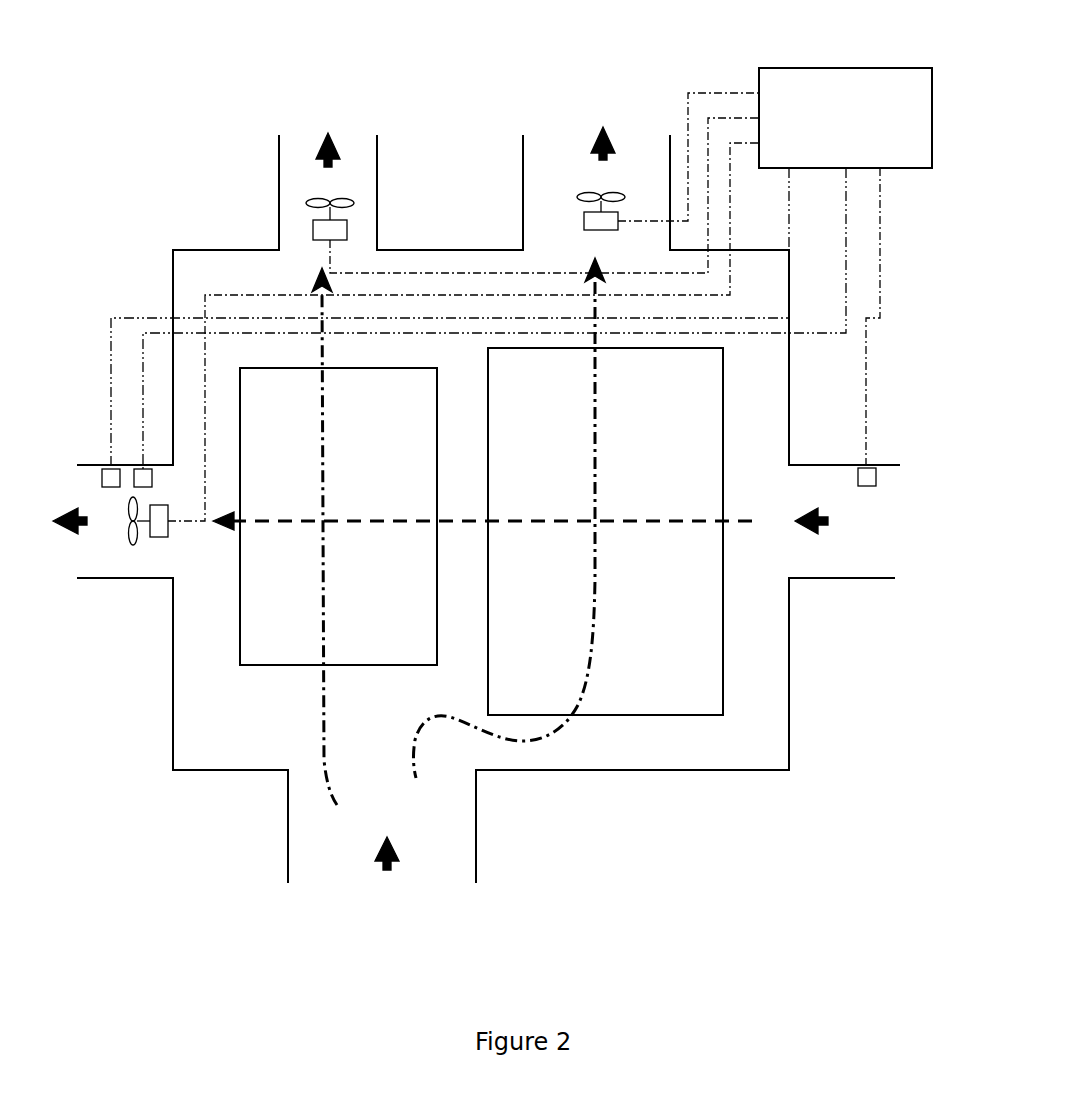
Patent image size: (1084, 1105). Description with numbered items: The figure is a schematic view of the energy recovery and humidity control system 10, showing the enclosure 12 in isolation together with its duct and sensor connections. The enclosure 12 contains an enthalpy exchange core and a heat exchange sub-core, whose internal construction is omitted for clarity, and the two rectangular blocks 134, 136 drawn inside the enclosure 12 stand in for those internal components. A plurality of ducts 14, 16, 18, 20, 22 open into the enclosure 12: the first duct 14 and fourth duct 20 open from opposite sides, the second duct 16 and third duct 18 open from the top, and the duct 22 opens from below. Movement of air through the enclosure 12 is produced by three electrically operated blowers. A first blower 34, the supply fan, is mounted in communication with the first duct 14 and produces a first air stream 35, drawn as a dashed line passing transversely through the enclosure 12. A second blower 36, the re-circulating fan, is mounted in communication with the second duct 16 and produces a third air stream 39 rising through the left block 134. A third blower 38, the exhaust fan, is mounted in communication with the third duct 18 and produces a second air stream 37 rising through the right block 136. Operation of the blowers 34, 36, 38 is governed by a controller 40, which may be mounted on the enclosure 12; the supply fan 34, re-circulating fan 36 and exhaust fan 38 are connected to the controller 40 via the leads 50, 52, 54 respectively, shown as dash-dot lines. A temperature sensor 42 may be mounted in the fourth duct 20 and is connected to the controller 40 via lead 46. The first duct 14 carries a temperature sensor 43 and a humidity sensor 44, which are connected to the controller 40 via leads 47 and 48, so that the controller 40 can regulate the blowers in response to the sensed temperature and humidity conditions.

The energy recovery and humidity control system 10 is at (418, 62).
The enclosure 12 is at (232, 249).
The first duct 14 is at (135, 580).
The second duct 16 is at (377, 208).
The third duct 18 is at (523, 148).
The fourth duct 20 is at (845, 580).
The duct 22 is at (288, 862).
The first blower 34 is at (170, 530).
The first air stream 35 is at (355, 518).
The second blower 36 is at (313, 228).
The second air stream 37 is at (592, 623).
The third blower 38 is at (584, 221).
The third air stream 39 is at (326, 590).
The controller 40 is at (869, 135).
The temperature sensor 42 is at (872, 465).
The temperature sensor 43 is at (138, 463).
The humidity sensor 44 is at (109, 467).
The lead 46 is at (868, 385).
The lead 47 is at (847, 266).
The lead 48 is at (143, 316).
The lead 50 is at (303, 294).
The lead 52 is at (705, 157).
The lead 54 is at (713, 92).
The first heat exchanger 134 is at (306, 433).
The second heat exchanger 136 is at (690, 437).